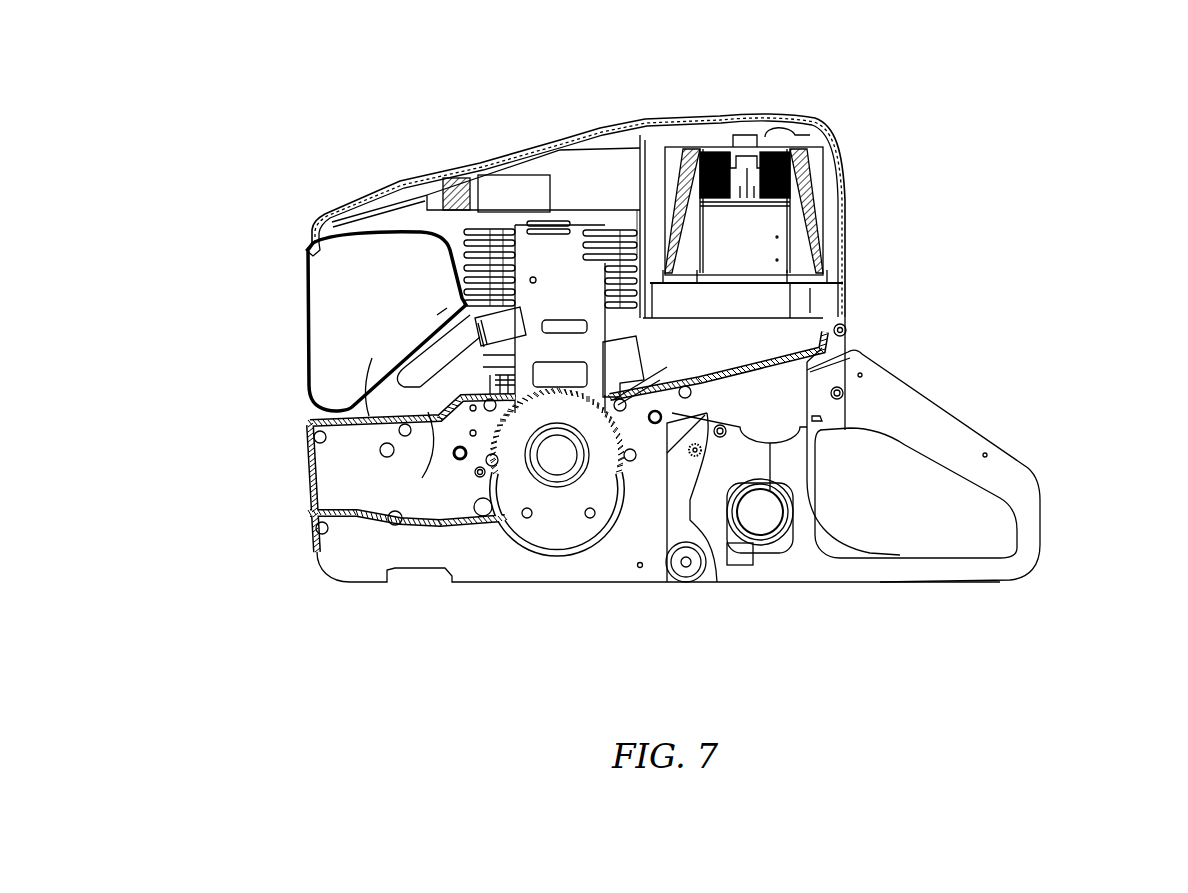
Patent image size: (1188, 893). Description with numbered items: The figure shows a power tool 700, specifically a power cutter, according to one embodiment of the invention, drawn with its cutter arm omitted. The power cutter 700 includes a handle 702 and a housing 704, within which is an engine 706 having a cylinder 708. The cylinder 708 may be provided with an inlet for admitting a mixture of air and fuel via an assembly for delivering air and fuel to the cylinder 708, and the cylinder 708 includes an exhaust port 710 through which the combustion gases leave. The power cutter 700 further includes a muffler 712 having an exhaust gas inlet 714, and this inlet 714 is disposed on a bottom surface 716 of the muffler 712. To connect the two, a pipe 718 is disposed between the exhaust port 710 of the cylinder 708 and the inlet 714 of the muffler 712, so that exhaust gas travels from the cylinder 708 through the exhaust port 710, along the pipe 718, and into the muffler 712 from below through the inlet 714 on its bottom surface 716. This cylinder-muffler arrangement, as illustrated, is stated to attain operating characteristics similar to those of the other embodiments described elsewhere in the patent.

The power tool 700 is at (250, 101).
The handle 702 is at (1040, 510).
The housing 704 is at (571, 130).
The engine 706 is at (455, 236).
The cylinder 708 is at (538, 308).
The exhaust port 710 is at (430, 360).
The muffler 712 is at (307, 372).
The exhaust gas inlet 714 is at (437, 315).
The bottom surface 716 is at (368, 412).
The pipe 718 is at (423, 473).